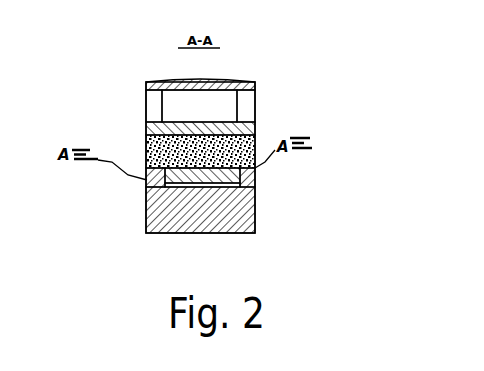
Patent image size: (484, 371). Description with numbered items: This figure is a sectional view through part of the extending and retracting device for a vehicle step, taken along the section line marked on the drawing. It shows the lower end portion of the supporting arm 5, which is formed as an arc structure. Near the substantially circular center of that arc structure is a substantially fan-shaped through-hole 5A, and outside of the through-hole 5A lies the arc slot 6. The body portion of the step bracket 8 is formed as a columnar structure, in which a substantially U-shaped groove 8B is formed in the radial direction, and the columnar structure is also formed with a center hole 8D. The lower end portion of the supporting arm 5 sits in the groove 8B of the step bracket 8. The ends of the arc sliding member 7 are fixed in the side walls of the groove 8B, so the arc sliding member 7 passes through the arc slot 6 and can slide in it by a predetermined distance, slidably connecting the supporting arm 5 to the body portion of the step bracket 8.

The supporting arm 5 is at (164, 85).
The through-hole 5A is at (229, 68).
The center hole 8D is at (245, 82).
The arc sliding member 7 is at (164, 138).
The arc slot 6 is at (257, 140).
The groove 8B is at (147, 187).
The step bracket 8 is at (243, 177).